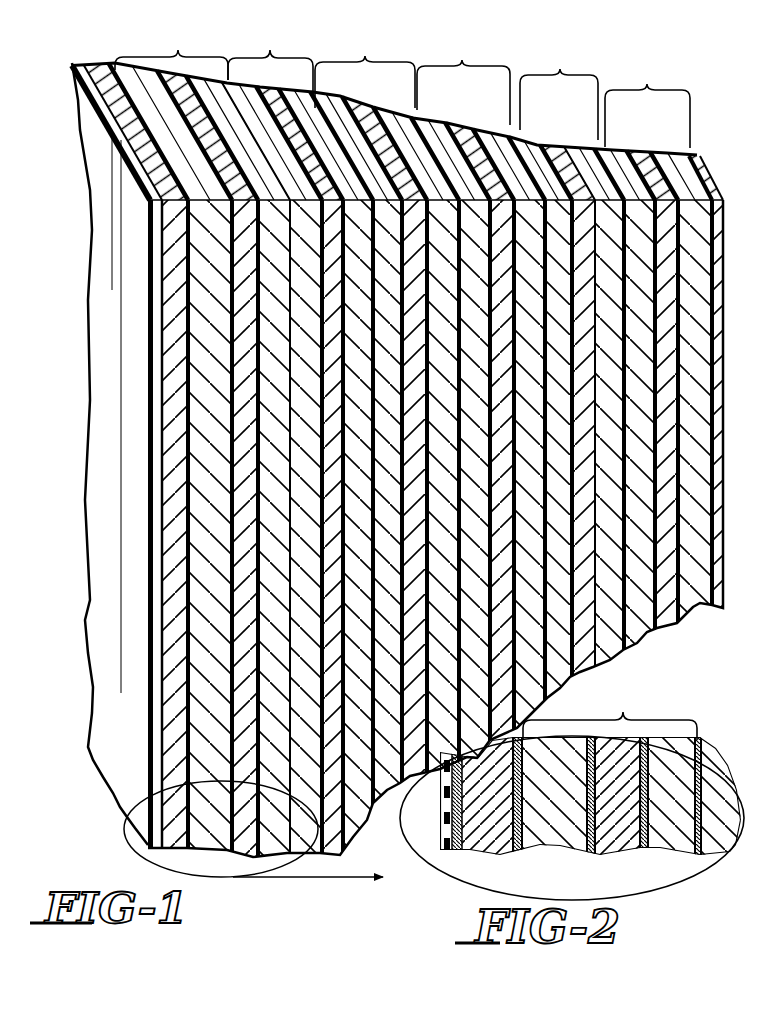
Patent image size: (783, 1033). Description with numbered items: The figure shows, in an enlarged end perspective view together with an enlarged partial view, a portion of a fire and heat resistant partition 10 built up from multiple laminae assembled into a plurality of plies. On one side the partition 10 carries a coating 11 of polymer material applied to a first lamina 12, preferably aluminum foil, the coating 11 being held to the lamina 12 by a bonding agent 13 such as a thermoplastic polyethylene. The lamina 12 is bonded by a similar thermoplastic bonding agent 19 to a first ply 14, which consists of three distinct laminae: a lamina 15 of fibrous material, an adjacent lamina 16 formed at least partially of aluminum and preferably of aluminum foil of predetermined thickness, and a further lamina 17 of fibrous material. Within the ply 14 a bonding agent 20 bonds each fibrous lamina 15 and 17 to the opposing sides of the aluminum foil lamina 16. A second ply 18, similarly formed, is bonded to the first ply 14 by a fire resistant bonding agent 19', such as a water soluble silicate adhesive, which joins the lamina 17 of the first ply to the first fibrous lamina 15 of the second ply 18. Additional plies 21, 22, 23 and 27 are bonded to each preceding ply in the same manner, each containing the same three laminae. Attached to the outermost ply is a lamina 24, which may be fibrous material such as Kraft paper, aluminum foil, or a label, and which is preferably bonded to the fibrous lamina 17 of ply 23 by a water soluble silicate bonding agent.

In FIG. 1, the partition 10 is at (503, 68).
In FIG. 1, the coating 11 is at (94, 341).
In FIG. 2, the coating 11 is at (453, 810).
In FIG. 1, the first lamina 12 is at (153, 837).
In FIG. 2, the first lamina 12 is at (482, 858).
In FIG. 2, the bonding agent 13 is at (478, 833).
In FIG. 1, the first ply 14 is at (183, 114).
In FIG. 2, the first ply 14 is at (610, 711).
In FIG. 1, the lamina of fibrous material 15 is at (333, 112).
In FIG. 2, the lamina of fibrous material 15 is at (563, 837).
In FIG. 1, the lamina of aluminum foil 16 is at (365, 112).
In FIG. 2, the lamina of aluminum foil 16 is at (613, 857).
In FIG. 1, the lamina of fibrous material 17 is at (397, 115).
In FIG. 2, the lamina of fibrous material 17 is at (723, 835).
In FIG. 1, the second ply 18 is at (297, 116).
In FIG. 2, the second ply 18 is at (728, 768).
In FIG. 2, the bonding agent 19 is at (522, 798).
In FIG. 2, the fire resistant bonding agent 19' is at (715, 779).
In FIG. 2, the bonding agent 20 is at (588, 853).
In FIG. 1, the ply 21 is at (384, 117).
In FIG. 1, the ply 22 is at (478, 120).
In FIG. 1, the ply 23 is at (566, 123).
In FIG. 1, the lamina 24 is at (724, 197).
In FIG. 1, the ply 27 is at (653, 130).